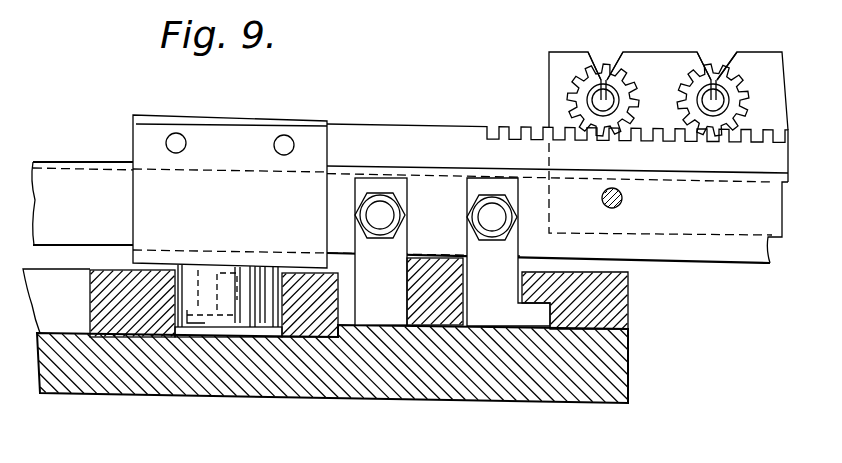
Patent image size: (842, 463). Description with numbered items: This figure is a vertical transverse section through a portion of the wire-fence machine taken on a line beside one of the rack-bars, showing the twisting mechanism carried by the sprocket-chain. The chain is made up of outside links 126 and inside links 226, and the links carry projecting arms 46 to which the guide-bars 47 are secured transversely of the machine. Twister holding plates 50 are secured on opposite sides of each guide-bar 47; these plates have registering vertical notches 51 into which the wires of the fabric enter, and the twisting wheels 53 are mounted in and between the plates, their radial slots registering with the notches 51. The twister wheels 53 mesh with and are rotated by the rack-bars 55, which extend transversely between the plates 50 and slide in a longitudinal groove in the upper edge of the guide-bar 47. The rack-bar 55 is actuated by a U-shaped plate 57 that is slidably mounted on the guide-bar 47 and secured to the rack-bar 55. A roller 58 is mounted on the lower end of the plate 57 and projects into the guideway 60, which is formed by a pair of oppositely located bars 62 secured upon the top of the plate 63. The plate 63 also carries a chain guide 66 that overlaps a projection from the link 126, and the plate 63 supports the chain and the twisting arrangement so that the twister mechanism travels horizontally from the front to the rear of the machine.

The projecting arms 46 is at (477, 187).
The guide-bars 47 is at (60, 170).
The twister holding plates 50 is at (658, 62).
The vertical notches 51 is at (602, 60).
The twisting wheels 53 is at (573, 88).
The rack-bars 55 is at (393, 127).
The U-shaped plates 57 is at (147, 207).
The roller 58 is at (188, 290).
The guideway 60 is at (230, 332).
The oppositely located bars 62 is at (147, 327).
The plates 63 is at (397, 387).
The chain guides 66 is at (628, 298).
The outside links 126 is at (436, 242).
The inside links 226 is at (433, 267).